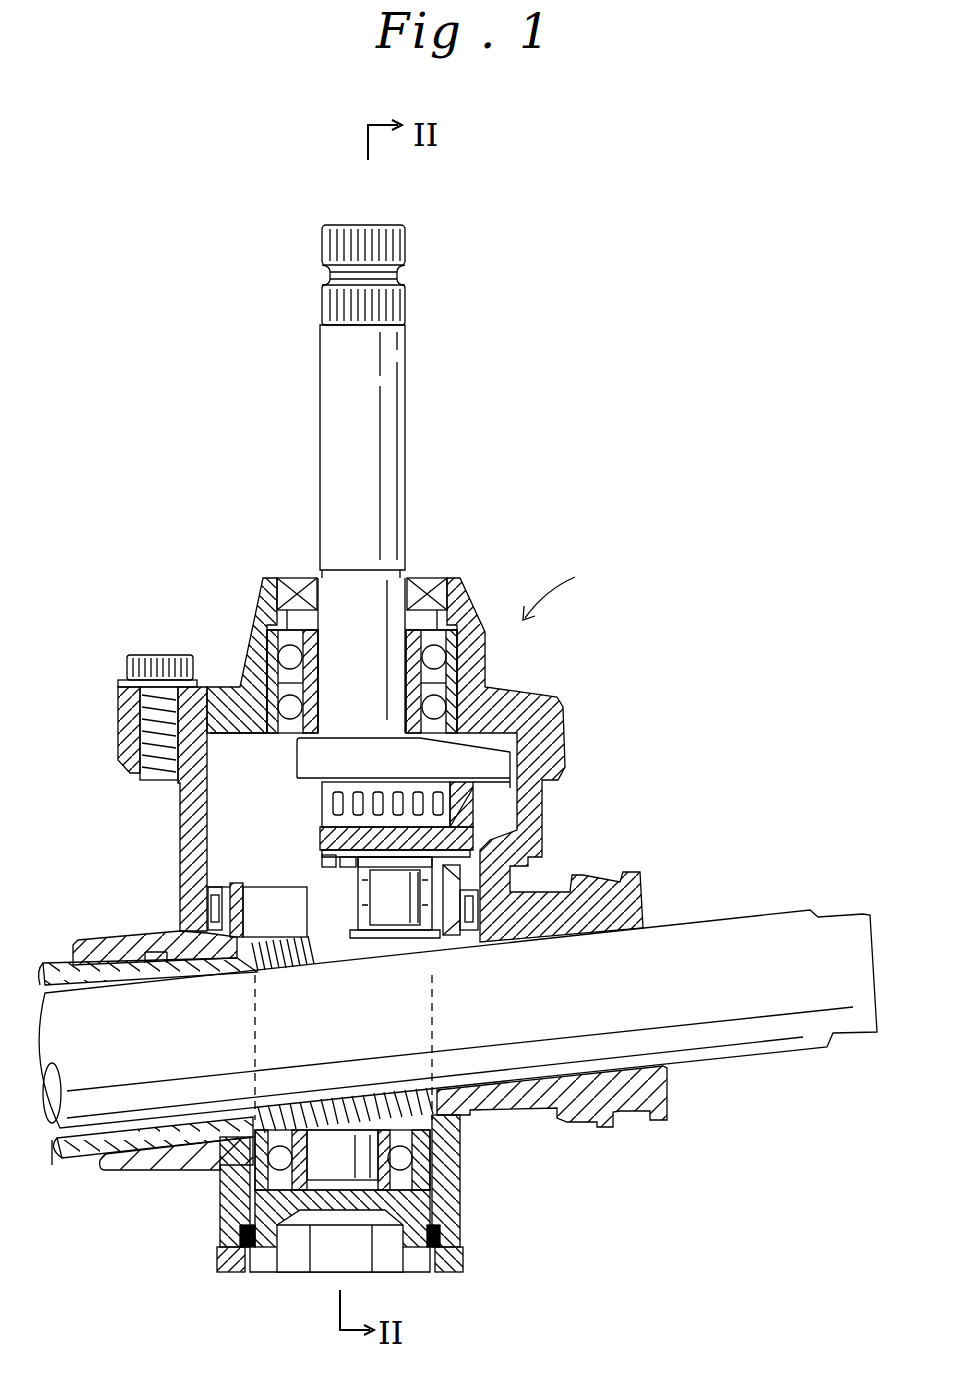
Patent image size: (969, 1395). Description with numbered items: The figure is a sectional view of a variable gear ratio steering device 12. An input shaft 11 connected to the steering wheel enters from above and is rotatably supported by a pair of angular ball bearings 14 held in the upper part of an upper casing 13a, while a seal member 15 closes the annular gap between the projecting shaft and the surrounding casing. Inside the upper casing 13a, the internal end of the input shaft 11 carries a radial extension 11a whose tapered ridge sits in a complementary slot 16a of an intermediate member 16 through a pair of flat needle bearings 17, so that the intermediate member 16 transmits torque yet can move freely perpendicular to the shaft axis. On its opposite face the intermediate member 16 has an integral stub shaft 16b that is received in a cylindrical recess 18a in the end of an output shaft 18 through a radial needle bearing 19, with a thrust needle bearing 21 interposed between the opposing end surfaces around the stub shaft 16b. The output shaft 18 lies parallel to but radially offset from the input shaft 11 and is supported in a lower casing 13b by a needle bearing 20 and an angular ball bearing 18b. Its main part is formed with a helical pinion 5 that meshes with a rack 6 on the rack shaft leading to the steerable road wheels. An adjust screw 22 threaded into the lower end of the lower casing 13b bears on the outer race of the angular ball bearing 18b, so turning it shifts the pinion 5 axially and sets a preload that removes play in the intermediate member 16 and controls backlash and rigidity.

The helical pinion 5 is at (453, 1122).
The rack 6 is at (740, 1060).
The input shaft 11 is at (407, 397).
The radial extension 11a is at (498, 748).
The variable gear ratio steering device 12 is at (412, 645).
The upper casing 13a is at (265, 586).
The lower casing 13b is at (180, 845).
The angular ball bearings 14 is at (272, 700).
The seal member 15 is at (418, 580).
The intermediate member 16 is at (473, 803).
The slot 16a is at (322, 823).
The stub shaft 16b is at (407, 932).
The flat needle bearings 17 is at (320, 797).
The output shaft 18 is at (225, 948).
The cylindrical recess 18a is at (360, 903).
The angular ball bearing 18b is at (413, 1158).
The radial needle bearing 19 is at (458, 872).
The needle bearing 20 is at (510, 890).
The thrust needle bearing 21 is at (353, 887).
The adjust screw 22 is at (418, 1275).